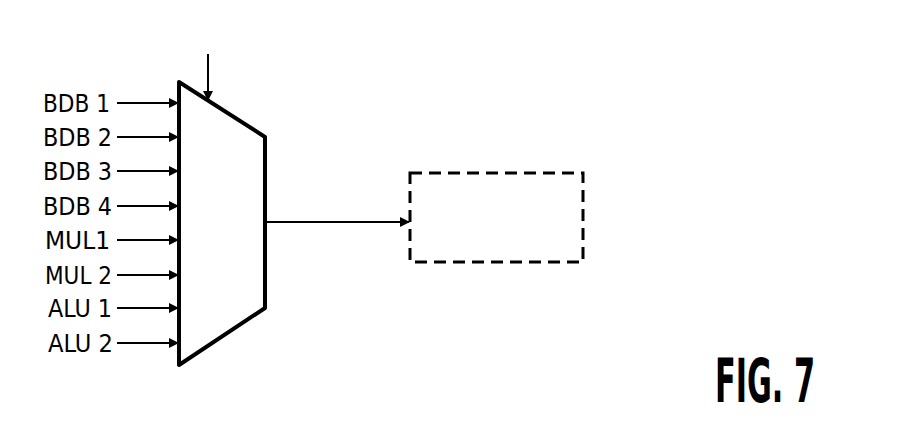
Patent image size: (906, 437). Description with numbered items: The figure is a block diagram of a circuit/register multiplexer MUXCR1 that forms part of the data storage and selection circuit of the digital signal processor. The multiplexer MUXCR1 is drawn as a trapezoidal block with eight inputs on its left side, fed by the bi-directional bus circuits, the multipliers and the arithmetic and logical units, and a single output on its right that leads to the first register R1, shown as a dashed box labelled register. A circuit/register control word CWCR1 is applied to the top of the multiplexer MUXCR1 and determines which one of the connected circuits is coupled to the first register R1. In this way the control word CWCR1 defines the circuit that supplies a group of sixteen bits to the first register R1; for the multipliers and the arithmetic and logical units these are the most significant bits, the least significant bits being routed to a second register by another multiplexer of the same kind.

The circuit/register multiplexer MUXCR1 is at (235, 132).
The circuit/register control word CWCR1 is at (185, 64).
The first register R1 is at (480, 185).